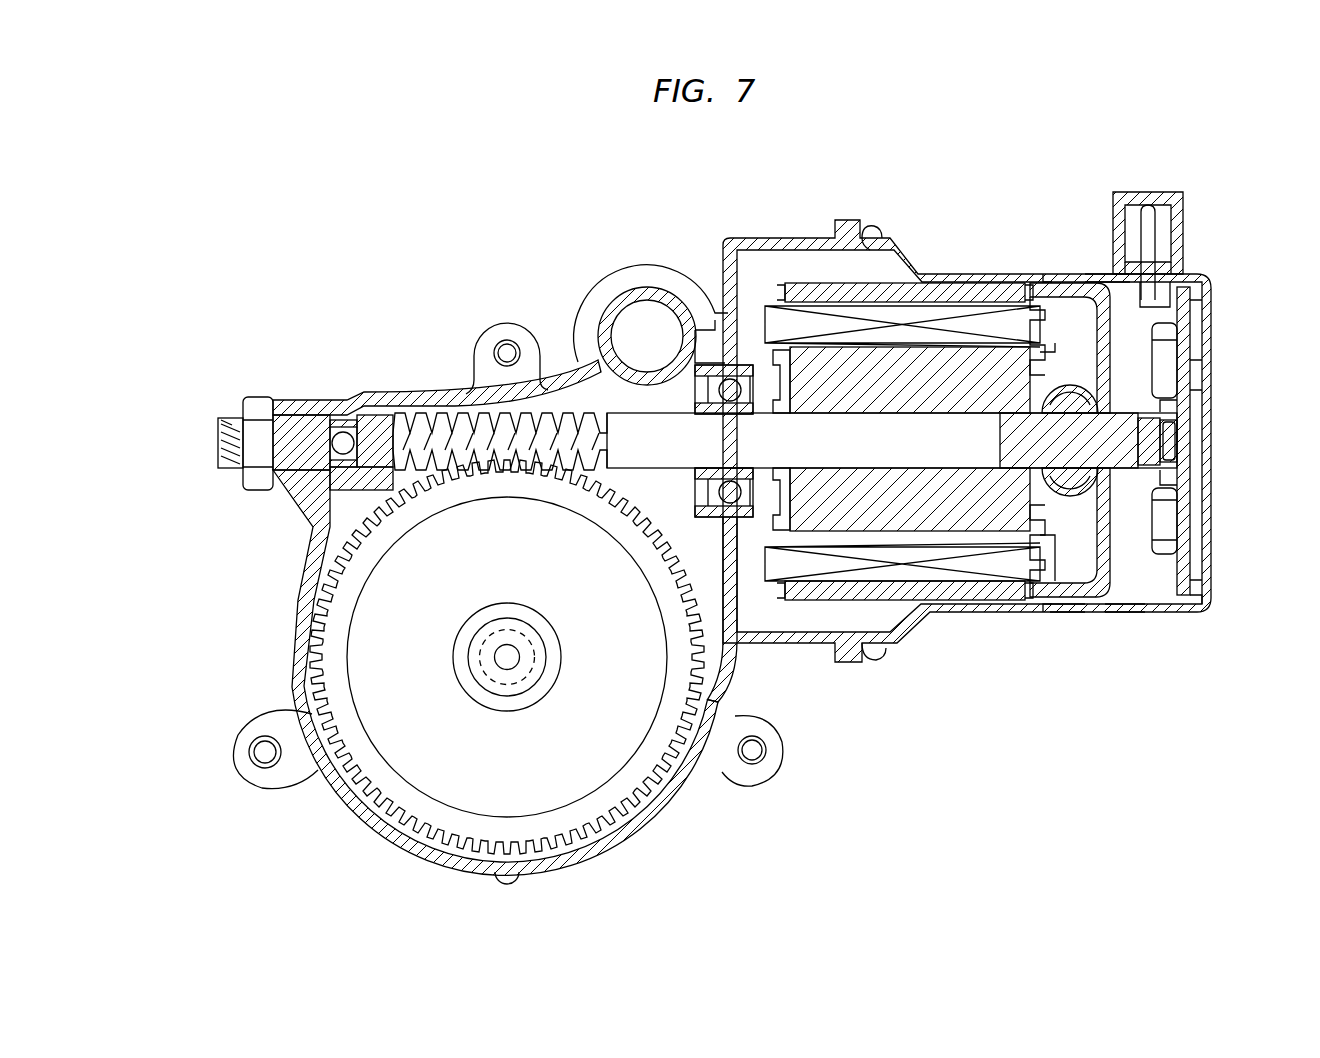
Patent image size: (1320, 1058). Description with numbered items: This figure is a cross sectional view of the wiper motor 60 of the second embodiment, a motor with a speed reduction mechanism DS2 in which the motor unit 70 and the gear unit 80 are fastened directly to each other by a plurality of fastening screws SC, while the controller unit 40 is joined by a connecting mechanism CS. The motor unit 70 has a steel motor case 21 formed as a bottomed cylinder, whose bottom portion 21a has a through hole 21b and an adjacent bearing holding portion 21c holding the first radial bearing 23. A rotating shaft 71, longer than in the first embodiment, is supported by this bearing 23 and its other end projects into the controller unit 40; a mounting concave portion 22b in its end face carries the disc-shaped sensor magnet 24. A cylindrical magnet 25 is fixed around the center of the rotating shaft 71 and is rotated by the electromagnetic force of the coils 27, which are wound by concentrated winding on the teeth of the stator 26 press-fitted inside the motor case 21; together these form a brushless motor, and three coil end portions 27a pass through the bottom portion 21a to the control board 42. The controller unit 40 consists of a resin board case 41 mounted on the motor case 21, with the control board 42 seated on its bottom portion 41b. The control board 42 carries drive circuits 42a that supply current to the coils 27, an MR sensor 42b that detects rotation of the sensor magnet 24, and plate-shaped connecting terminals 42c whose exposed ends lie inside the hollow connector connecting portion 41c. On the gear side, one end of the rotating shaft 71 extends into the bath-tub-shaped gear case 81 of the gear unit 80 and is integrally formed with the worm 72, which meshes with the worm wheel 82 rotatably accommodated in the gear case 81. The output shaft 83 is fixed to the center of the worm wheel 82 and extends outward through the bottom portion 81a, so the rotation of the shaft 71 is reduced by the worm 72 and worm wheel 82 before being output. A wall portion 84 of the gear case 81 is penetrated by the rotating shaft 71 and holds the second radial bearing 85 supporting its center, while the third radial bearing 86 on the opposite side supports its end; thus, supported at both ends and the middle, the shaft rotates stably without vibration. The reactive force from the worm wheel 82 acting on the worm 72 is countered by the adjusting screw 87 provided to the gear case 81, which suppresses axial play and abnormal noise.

The wiper motor 60 is at (514, 274).
The motor unit 70 is at (990, 612).
The rotating shaft 71 is at (975, 618).
The worm 72 is at (424, 406).
The gear unit 80 is at (338, 804).
The gear case 81 is at (303, 580).
The bottom portion 81a is at (600, 397).
The worm wheel 82 is at (400, 680).
The output shaft 83 is at (556, 690).
The wall portion 84 is at (740, 575).
The second radial bearing 85 is at (742, 384).
The third radial bearing 86 is at (361, 396).
The adjusting screw 87 is at (217, 442).
The speed reduction mechanism DS2 is at (427, 397).
The motor case 21 is at (978, 275).
The bottom portion 21a is at (1102, 310).
The through hole 21b is at (1122, 606).
The bearing holding portion 21c is at (1067, 614).
The mounting concave portion 22b is at (1194, 375).
The first radial bearing 23 is at (1063, 392).
The sensor magnet 24 is at (1112, 478).
The magnet 25 is at (995, 385).
The stator 26 is at (832, 290).
The coils 27 is at (948, 322).
The coil end portions 27a is at (1142, 604).
The controller unit 40 is at (1188, 620).
The board case 41 is at (1215, 585).
The bottom portion 41b is at (1199, 428).
The connector connecting portion 41c is at (1183, 233).
The control board 42 is at (1196, 450).
The drive circuits 42a is at (1170, 345).
The MR sensor 42b is at (1178, 442).
The connecting terminals 42c is at (1150, 222).
The fastening screws SC is at (870, 228).
The connecting mechanism CS is at (1052, 266).